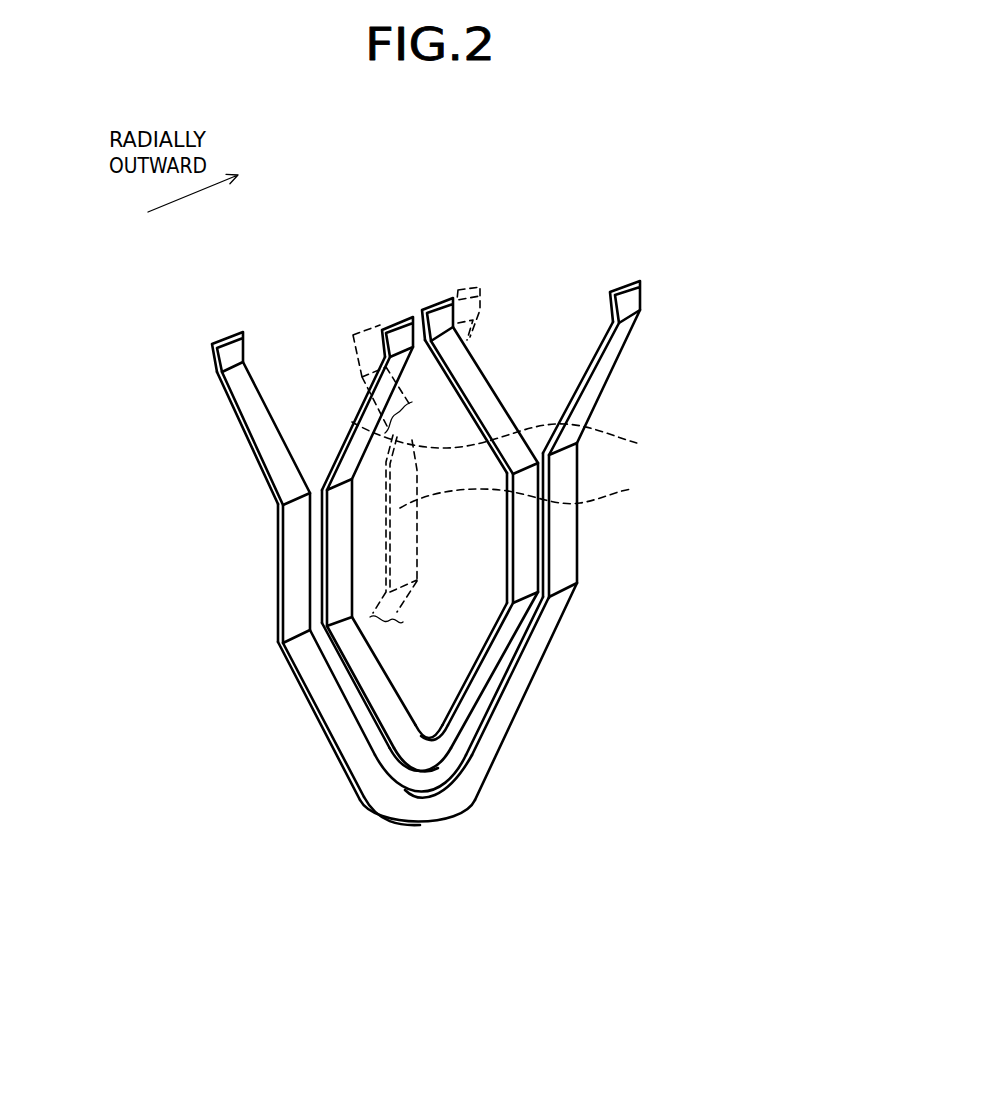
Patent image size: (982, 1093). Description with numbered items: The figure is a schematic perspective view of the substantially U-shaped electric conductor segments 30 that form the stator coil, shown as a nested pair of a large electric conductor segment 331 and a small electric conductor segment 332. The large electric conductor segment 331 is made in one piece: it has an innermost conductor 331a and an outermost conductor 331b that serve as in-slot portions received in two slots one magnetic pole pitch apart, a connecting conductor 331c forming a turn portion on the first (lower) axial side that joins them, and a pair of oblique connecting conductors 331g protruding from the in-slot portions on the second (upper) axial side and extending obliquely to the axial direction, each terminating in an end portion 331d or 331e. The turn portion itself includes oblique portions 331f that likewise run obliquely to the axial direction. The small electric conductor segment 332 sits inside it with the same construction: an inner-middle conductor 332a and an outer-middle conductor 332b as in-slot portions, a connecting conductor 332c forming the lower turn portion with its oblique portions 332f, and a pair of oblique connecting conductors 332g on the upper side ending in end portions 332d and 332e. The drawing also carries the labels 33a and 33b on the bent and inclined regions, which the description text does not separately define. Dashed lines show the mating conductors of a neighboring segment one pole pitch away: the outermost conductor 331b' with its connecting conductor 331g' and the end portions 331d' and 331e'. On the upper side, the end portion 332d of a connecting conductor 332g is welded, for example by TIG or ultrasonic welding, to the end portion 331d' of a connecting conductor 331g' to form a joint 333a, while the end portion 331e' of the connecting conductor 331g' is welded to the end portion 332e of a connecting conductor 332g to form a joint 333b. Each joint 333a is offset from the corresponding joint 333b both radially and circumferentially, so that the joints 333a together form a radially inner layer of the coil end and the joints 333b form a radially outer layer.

The electric conductor segment 30 is at (349, 808).
The first portion of spring member 33a is at (298, 758).
The second portion of spring member 33b is at (225, 442).
The large electric conductor segment 331 is at (620, 386).
The innermost conductor 331a is at (293, 530).
The outermost conductor 331b is at (649, 520).
The connecting conductor 331c is at (417, 813).
The end portion 331d is at (158, 372).
The end portion 331e is at (700, 275).
The oblique portion 331f is at (313, 698).
The connecting conductor 331g is at (430, 407).
The outermost conductor 331b' is at (568, 493).
The end portion 331d' is at (312, 437).
The end portion 331e' is at (519, 287).
The connecting conductor 331g' is at (544, 441).
The small electric conductor segment 332 is at (531, 398).
The inner-middle conductor 332a is at (340, 583).
The outer-middle conductor 332b is at (520, 583).
The connecting conductor 332c is at (427, 758).
The end portion 332d is at (393, 332).
The end portion 332e is at (443, 310).
The oblique portion 332f is at (483, 677).
The connecting conductor 332g is at (358, 447).
The joint 333a is at (378, 296).
The joint 333b is at (458, 258).